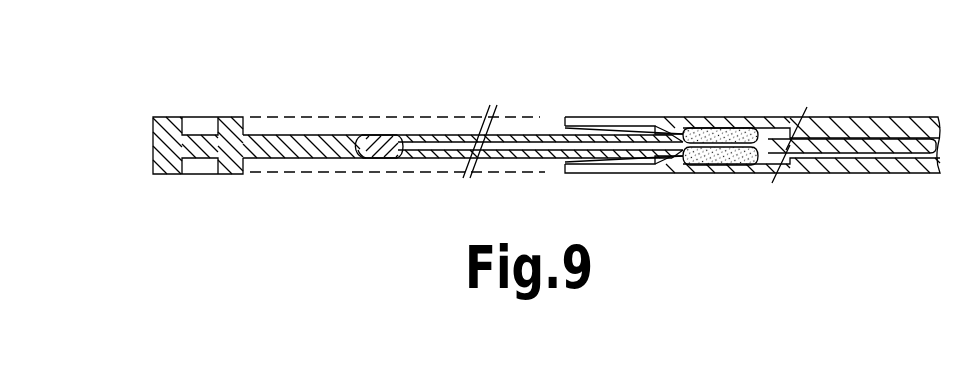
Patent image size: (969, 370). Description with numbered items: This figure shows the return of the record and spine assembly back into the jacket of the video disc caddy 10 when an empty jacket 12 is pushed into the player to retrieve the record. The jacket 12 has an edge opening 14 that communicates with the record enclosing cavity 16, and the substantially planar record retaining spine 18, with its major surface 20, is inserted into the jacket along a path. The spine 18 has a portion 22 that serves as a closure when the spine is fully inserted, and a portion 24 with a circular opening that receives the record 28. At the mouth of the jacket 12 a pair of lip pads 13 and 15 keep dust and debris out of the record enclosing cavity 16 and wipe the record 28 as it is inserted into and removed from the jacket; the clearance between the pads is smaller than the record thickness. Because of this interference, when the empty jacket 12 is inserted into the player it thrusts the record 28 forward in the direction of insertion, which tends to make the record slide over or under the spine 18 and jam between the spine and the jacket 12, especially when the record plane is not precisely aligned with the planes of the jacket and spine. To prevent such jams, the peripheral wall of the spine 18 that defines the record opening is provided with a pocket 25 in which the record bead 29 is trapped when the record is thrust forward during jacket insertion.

The video disc caddy 10 is at (591, 57).
The jacket 12 is at (889, 86).
The lip pad 13 is at (726, 128).
The edge opening 14 is at (565, 126).
The lip pad 15 is at (727, 165).
The record enclosing cavity 16 is at (932, 153).
The record retaining spine 18 is at (231, 107).
The major surface 20 is at (273, 135).
The closure portion 22 is at (153, 135).
The record receiving portion 24 is at (318, 147).
The pocket 25 is at (363, 152).
The record 28 is at (603, 145).
The record bead 29 is at (385, 133).